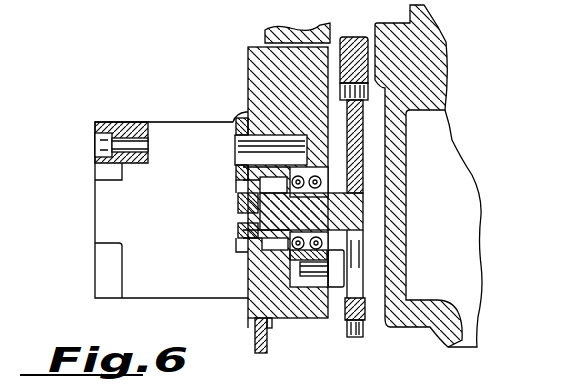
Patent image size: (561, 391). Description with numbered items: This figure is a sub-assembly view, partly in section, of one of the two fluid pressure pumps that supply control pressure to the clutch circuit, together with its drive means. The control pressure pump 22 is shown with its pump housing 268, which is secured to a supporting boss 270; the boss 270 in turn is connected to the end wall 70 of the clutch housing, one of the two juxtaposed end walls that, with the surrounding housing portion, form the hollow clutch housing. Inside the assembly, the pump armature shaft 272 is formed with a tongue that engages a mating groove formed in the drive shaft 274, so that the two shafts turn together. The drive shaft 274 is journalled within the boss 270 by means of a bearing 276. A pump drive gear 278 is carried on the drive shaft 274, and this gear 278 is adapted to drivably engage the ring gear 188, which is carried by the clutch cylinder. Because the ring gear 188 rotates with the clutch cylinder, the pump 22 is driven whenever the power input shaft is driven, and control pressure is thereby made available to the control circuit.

The control pressure pump 22 is at (177, 299).
The end wall 70 is at (252, 328).
The ring gear 188 is at (349, 44).
The pump housing 268 is at (177, 150).
The supporting boss 270 is at (298, 310).
The pump armature shaft 272 is at (245, 208).
The drive shaft 274 is at (365, 205).
The bearing 276 is at (317, 164).
The pump drive gear 278 is at (367, 312).